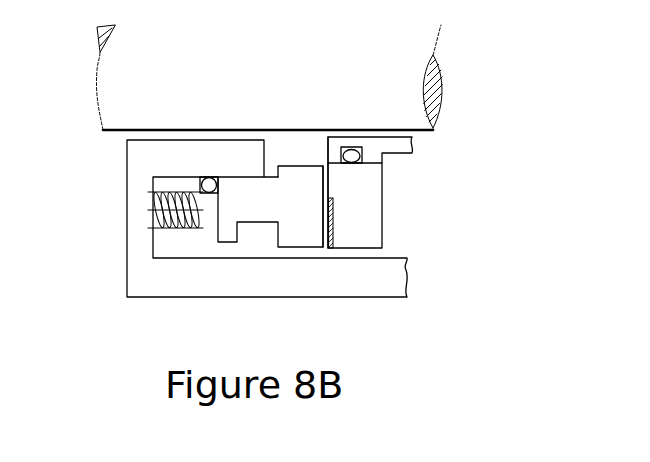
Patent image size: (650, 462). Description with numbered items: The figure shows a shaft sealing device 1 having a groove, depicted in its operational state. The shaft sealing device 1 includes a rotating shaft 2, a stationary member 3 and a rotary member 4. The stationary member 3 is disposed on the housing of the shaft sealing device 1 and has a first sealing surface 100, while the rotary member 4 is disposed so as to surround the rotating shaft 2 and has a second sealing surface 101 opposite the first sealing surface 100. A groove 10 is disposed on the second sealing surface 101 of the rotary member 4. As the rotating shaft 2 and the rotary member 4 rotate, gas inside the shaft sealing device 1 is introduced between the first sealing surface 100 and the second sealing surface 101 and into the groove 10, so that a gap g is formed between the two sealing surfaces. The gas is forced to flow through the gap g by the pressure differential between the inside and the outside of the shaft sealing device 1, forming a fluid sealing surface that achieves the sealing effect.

The shaft sealing device 1 is at (65, 50).
The rotating shaft 2 is at (430, 108).
The stationary member 3 is at (257, 213).
The rotary member 4 is at (374, 215).
The groove 10 is at (333, 225).
The first sealing surface 100 is at (322, 187).
The second sealing surface 101 is at (328, 177).
The gap g is at (325, 238).